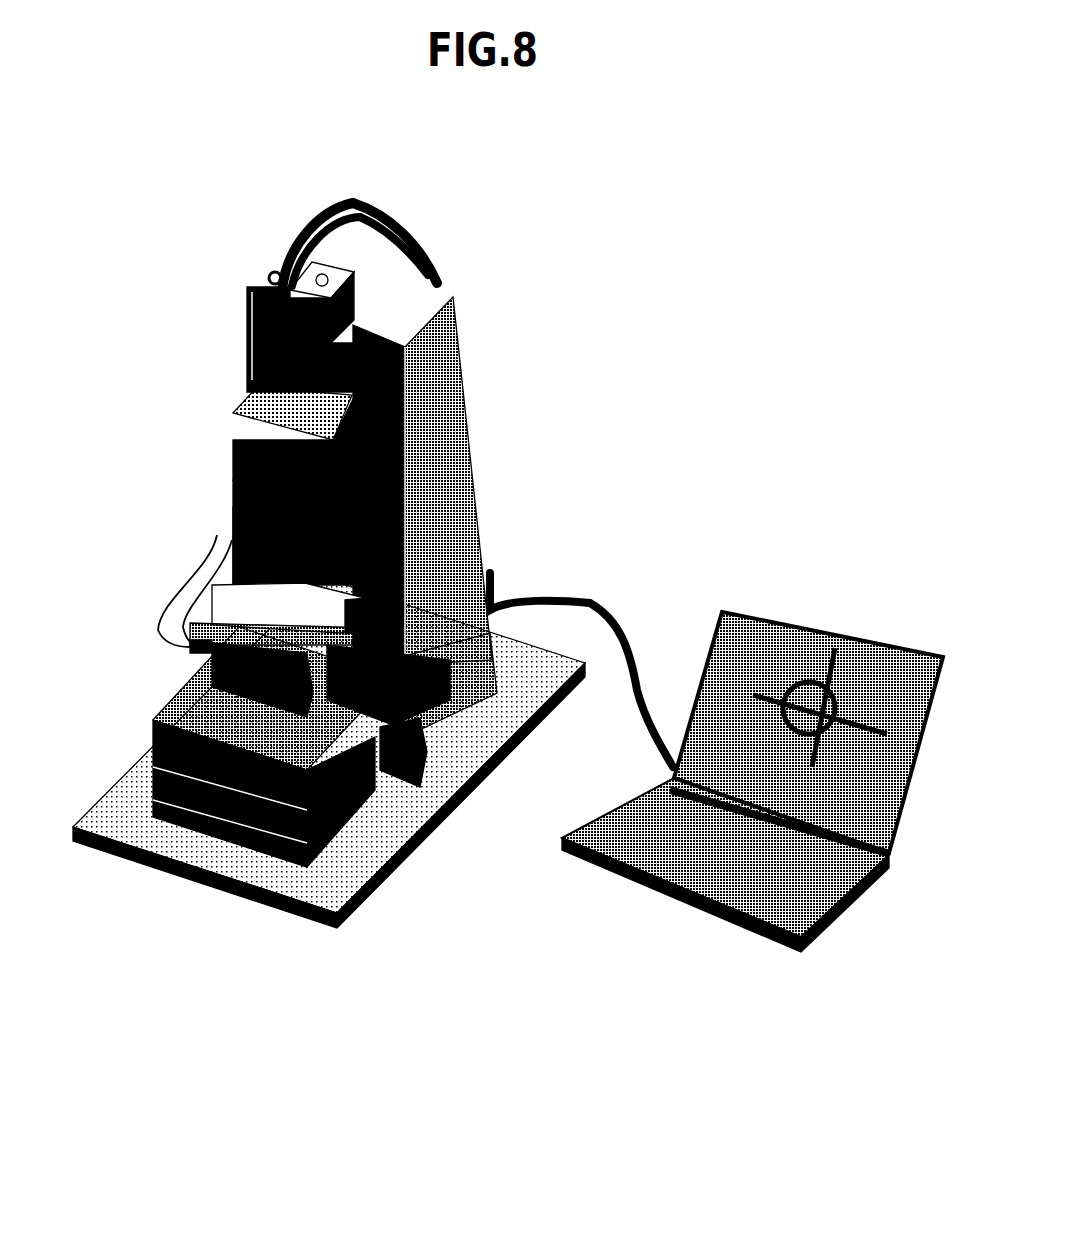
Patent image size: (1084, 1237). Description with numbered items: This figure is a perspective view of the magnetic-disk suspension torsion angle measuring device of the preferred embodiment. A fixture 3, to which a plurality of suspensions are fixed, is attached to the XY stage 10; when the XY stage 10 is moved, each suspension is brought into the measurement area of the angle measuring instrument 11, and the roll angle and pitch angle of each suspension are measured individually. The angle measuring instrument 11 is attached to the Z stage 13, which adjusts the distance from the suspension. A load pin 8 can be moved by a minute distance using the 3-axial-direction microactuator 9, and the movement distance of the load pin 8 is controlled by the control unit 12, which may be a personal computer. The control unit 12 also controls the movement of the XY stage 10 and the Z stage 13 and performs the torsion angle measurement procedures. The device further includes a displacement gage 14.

The fixture 3 is at (477, 684).
The load pin 8 is at (373, 767).
The 3-axial-direction microactuator 9 is at (197, 690).
The XY stage 10 is at (350, 828).
The angle measuring instrument 11 is at (232, 428).
The control unit 12 is at (742, 625).
The Z stage 13 is at (497, 378).
The displacement gage 14 is at (230, 513).